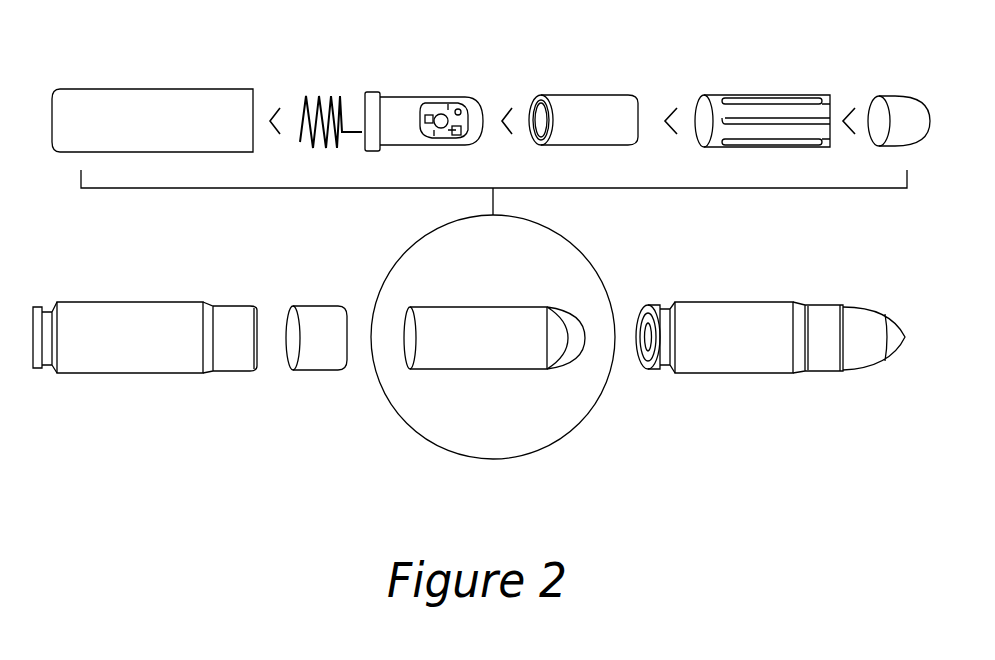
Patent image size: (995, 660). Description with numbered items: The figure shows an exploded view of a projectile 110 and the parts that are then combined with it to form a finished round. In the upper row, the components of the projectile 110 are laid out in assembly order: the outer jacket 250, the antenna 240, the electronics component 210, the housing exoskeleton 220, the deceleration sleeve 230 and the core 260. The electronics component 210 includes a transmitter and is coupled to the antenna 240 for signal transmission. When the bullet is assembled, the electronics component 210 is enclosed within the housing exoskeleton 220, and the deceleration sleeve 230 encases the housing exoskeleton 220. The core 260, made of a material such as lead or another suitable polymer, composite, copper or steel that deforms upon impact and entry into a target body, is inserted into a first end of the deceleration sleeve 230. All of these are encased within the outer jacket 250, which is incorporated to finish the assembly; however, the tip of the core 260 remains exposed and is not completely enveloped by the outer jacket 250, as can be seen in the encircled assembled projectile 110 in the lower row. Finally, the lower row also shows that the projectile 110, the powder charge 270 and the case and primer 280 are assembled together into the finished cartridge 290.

The projectile 110 is at (492, 307).
The electronics component 210 is at (447, 95).
The housing exoskeleton 220 is at (580, 95).
The deceleration sleeve 230 is at (737, 95).
The antenna 240 is at (331, 98).
The outer jacket 250 is at (173, 88).
The core 260 is at (885, 97).
The powder charge 270 is at (322, 305).
The case and primer 280 is at (167, 302).
The finished cartridge 290 is at (737, 302).